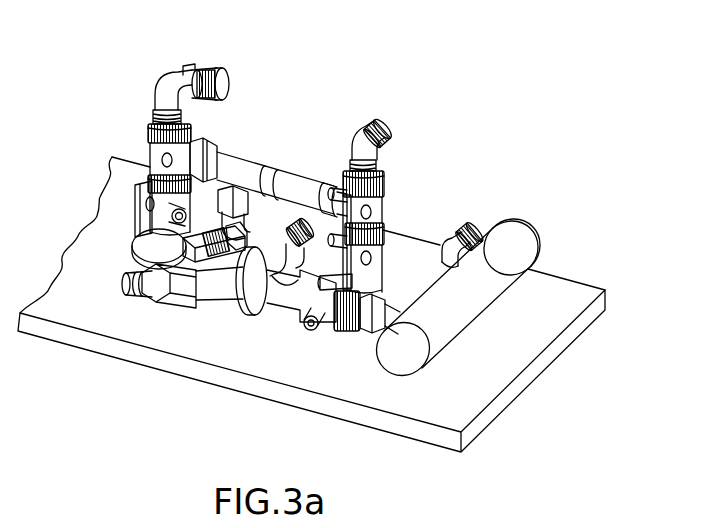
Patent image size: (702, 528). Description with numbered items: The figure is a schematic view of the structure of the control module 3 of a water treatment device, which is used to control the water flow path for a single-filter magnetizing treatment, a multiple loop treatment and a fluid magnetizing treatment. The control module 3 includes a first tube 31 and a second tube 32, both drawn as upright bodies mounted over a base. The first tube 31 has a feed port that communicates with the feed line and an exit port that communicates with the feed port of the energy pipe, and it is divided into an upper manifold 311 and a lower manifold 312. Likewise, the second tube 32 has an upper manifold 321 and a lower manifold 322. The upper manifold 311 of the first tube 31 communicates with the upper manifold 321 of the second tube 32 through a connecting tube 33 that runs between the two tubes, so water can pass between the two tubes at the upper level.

The control module 3 is at (408, 123).
The first tube 31 is at (167, 97).
The upper manifold 311 is at (147, 165).
The lower manifold 312 is at (135, 198).
The second tube 32 is at (374, 153).
The upper manifold 321 is at (362, 205).
The lower manifold 322 is at (357, 252).
The connecting tube 33 is at (297, 175).